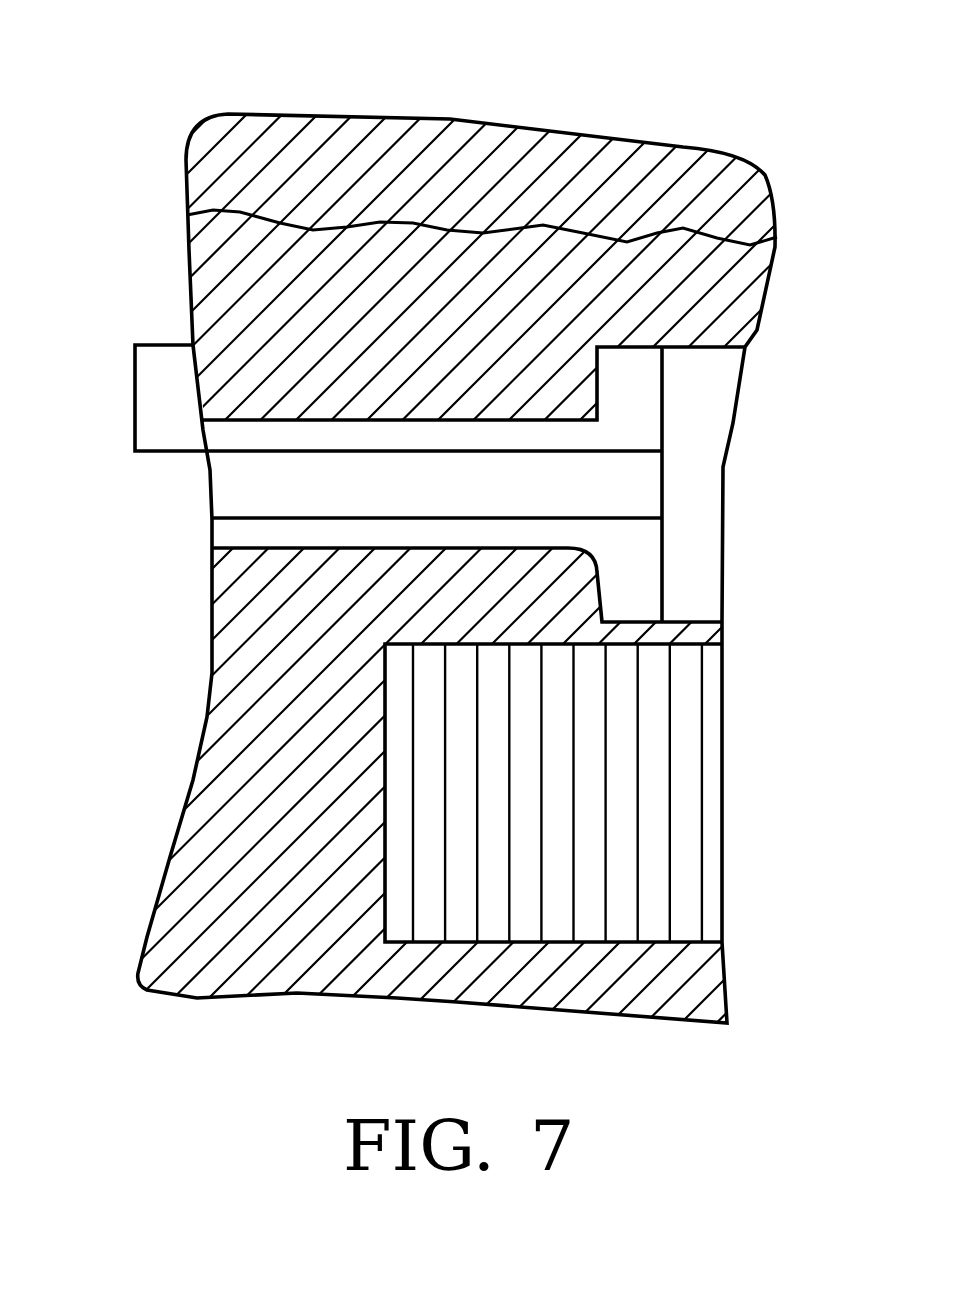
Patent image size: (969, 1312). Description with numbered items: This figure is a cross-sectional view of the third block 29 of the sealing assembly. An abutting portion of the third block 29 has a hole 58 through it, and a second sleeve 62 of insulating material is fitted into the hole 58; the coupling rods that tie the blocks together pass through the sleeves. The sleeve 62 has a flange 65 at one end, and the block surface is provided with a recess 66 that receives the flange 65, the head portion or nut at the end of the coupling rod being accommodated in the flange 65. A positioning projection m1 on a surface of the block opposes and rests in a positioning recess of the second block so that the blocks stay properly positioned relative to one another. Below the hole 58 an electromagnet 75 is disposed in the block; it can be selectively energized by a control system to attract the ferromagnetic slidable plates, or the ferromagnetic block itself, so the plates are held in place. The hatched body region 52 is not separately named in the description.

The third block 29 is at (494, 97).
The stator core 52 is at (732, 292).
The positioning projection m1 is at (350, 398).
The second sleeve 62 is at (692, 401).
The recess 66 is at (693, 480).
The flange 65 is at (627, 578).
The hole 58 is at (678, 620).
The electromagnet 75 is at (683, 828).